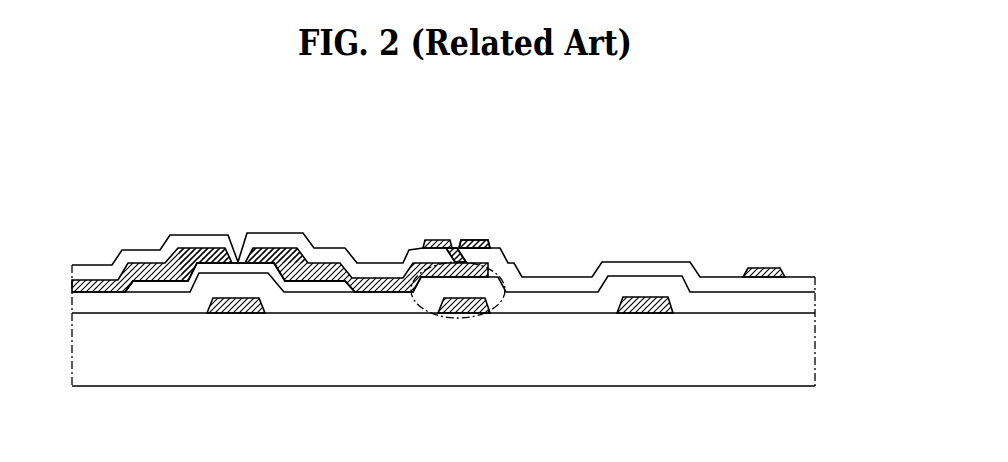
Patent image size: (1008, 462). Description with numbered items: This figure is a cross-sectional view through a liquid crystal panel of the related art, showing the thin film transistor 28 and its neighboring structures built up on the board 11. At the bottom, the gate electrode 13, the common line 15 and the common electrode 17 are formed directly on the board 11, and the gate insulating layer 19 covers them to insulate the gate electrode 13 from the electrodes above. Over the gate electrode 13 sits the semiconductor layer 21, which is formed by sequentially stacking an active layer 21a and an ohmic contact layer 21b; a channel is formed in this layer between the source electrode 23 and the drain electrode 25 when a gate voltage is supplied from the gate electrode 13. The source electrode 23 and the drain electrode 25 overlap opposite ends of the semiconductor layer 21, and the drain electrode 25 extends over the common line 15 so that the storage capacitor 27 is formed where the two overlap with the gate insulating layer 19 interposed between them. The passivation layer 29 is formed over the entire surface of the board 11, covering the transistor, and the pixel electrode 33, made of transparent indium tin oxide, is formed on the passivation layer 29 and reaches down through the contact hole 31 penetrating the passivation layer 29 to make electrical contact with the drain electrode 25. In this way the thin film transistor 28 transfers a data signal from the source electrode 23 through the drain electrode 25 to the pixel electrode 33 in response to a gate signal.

The board 11 is at (815, 351).
The gate electrode 13 is at (234, 297).
The common line 15 is at (455, 319).
The common electrode 17 is at (640, 313).
The gate insulating layer 19 is at (815, 304).
The semiconductor layer 21 is at (130, 199).
The active layer 21a is at (145, 287).
The ohmic contact layer 21b is at (172, 252).
The source electrode 23 is at (103, 283).
The drain electrode 25 is at (283, 247).
The storage capacitor Cst 27 is at (499, 266).
The thin film transistor 28 is at (357, 402).
The passivation layer 29 is at (815, 281).
The contact hole 31 is at (460, 232).
The pixel electrode 33 is at (758, 267).